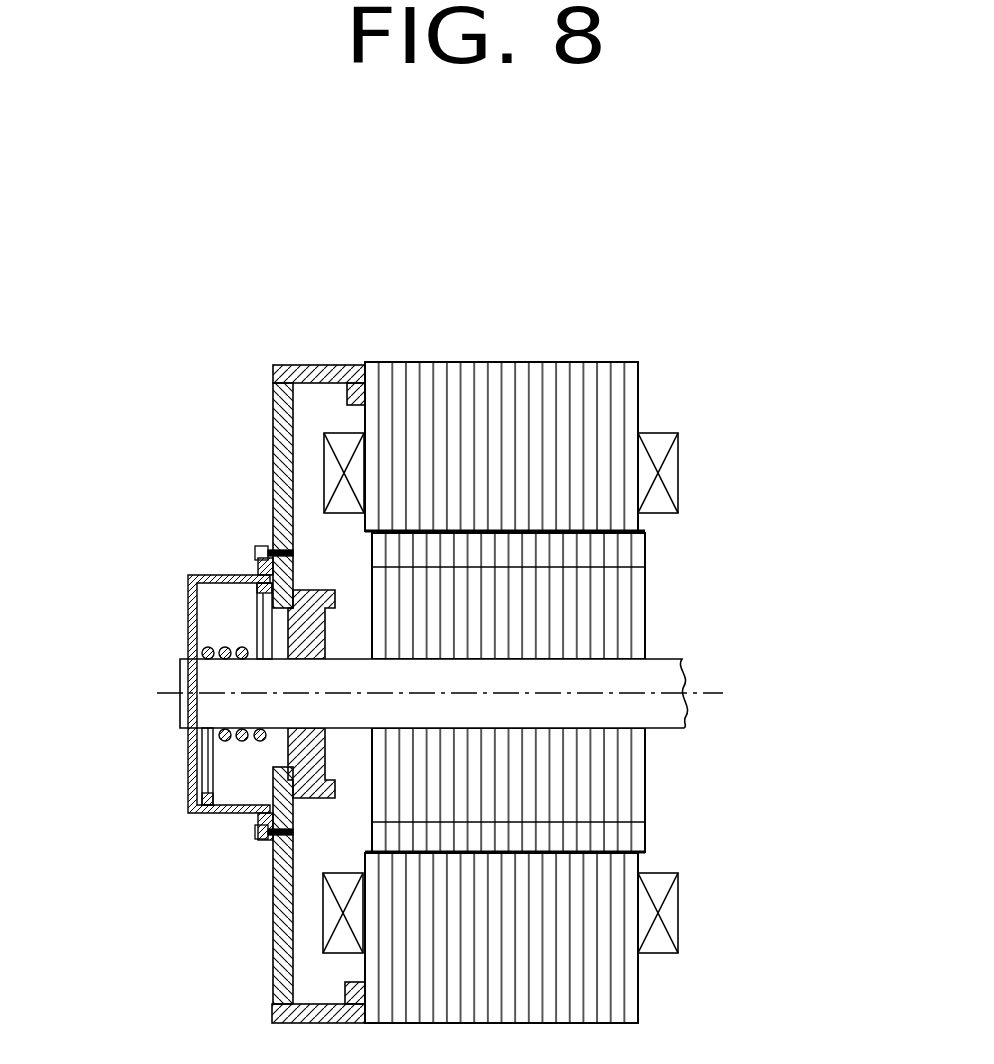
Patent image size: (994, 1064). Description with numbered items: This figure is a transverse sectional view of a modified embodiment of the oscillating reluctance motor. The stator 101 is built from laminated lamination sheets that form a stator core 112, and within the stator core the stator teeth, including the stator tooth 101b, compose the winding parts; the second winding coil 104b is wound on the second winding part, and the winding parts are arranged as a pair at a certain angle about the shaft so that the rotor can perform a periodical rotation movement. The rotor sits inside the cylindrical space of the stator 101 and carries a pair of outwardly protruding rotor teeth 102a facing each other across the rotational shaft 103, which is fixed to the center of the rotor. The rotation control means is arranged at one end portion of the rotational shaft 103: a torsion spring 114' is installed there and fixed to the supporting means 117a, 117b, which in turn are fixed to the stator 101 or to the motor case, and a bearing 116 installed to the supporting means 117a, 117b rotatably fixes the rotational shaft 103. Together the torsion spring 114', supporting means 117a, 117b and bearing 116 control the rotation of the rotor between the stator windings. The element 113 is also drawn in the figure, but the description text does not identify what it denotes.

The stator 101 is at (635, 352).
The stator core 112 is at (632, 383).
The stator tooth 101b is at (617, 515).
The rotor tooth 102a is at (625, 555).
The rotational shaft 103 is at (668, 673).
The second winding coil 104b is at (670, 915).
The housing 113 is at (273, 367).
The bearing 116 is at (290, 630).
The torsion spring 114' is at (158, 709).
The supporting means 117b is at (188, 793).
The supporting means 117a is at (273, 932).